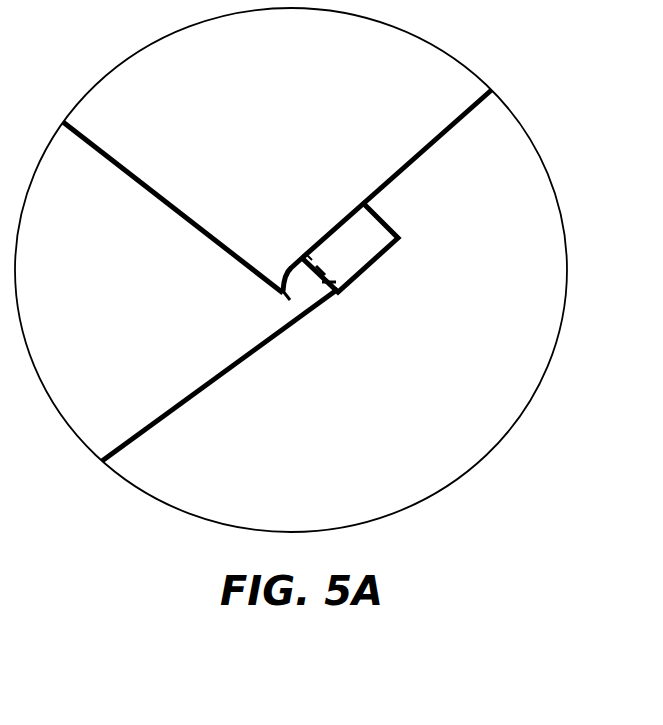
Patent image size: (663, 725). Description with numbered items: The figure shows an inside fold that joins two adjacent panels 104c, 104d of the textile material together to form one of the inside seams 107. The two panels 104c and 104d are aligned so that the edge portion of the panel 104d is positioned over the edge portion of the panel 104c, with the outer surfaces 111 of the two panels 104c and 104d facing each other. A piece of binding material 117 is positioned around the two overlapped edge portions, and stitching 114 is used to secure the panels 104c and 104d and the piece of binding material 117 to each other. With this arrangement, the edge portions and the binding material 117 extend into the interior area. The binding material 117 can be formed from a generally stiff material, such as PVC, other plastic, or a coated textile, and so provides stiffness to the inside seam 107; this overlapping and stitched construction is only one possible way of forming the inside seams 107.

The panel 104c is at (217, 375).
The panel 104d is at (387, 190).
The outer surface 111 is at (211, 162).
The binding material 117 is at (386, 224).
The stitching 114 is at (333, 281).
The inside seam 107 is at (416, 277).